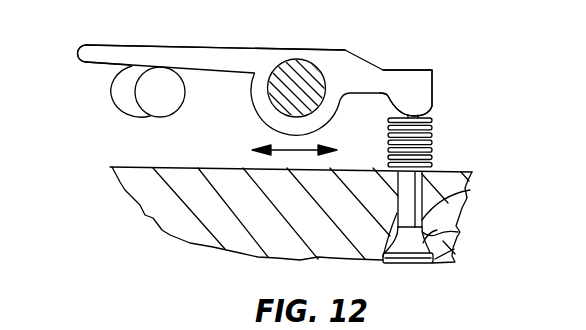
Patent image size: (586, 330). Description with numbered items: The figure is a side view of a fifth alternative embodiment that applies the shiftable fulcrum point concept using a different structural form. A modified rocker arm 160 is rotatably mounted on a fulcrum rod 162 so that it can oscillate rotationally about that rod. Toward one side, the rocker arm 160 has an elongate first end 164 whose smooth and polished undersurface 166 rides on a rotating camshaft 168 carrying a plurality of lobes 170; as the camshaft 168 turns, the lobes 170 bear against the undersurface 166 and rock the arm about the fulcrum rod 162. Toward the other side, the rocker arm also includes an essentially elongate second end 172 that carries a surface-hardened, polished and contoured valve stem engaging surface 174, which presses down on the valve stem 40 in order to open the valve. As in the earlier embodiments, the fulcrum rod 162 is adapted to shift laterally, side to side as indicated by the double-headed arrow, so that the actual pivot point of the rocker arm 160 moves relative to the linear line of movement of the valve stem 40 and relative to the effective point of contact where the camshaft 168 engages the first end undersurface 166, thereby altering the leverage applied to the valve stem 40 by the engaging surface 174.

The valve stem 40 is at (458, 232).
The rocker arm 160 is at (286, 26).
The fulcrum rod 162 is at (305, 77).
The first end 164 is at (143, 53).
The undersurface 166 is at (90, 65).
The camshaft 168 is at (156, 110).
The lobes 170 is at (123, 100).
The second end 172 is at (409, 92).
The valve stem engaging surface 174 is at (398, 111).